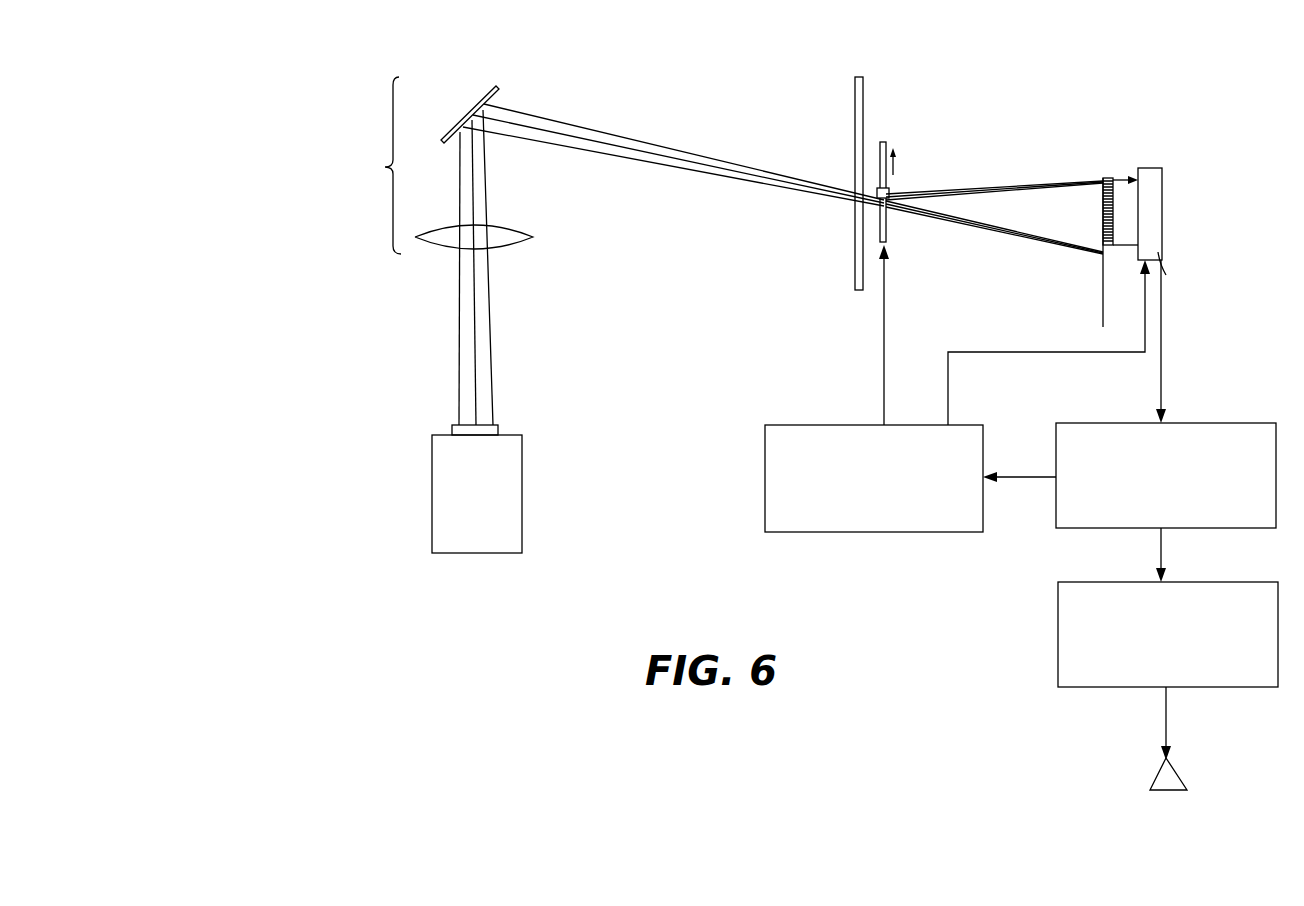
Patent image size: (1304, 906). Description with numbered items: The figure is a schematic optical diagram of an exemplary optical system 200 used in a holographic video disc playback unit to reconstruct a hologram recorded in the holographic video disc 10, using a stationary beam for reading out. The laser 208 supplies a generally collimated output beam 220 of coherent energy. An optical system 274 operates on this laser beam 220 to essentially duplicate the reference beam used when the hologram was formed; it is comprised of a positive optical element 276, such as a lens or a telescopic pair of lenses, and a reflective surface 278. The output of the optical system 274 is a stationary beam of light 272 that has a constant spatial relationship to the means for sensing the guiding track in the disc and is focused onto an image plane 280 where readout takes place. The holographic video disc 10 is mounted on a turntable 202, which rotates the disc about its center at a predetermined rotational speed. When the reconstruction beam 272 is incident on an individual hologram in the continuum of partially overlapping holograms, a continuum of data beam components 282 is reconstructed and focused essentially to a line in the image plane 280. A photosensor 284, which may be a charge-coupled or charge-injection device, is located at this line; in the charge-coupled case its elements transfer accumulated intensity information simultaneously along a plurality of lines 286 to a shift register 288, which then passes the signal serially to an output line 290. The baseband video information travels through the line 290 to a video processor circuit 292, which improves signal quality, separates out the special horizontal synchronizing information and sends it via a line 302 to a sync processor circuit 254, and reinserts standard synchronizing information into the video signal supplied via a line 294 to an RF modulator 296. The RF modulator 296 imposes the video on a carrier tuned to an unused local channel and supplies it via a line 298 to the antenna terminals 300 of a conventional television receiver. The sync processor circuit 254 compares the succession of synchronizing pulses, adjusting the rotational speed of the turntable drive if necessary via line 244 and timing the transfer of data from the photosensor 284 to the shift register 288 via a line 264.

The optical system 200 is at (615, 52).
The optical system 274 is at (369, 165).
The reflective surface 278 is at (500, 90).
The positive optical element 276 is at (496, 248).
The output beam 220 is at (458, 370).
The laser 208 is at (432, 450).
The stationary beam of light 272 is at (735, 163).
The holographic video disc 10 is at (855, 100).
The turntable 202 is at (887, 142).
The continuum of data beam components 282 is at (992, 190).
The image plane 280 is at (1103, 294).
The photosensor 284 is at (1108, 178).
The lines 286 is at (1120, 186).
The shift register 288 is at (1157, 236).
The line 244 is at (885, 352).
The line 264 is at (973, 350).
The sync processor circuit 254 is at (768, 445).
The output line 290 is at (1162, 375).
The video processor circuit 292 is at (1066, 422).
The line 302 is at (1017, 481).
The line 294 is at (1162, 562).
The RF modulator 296 is at (1253, 677).
The line 298 is at (1165, 723).
The antenna terminals 300 is at (1153, 773).